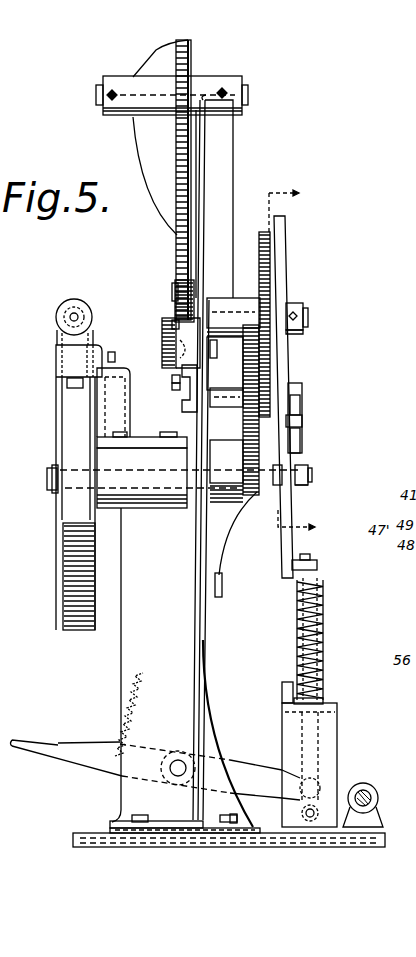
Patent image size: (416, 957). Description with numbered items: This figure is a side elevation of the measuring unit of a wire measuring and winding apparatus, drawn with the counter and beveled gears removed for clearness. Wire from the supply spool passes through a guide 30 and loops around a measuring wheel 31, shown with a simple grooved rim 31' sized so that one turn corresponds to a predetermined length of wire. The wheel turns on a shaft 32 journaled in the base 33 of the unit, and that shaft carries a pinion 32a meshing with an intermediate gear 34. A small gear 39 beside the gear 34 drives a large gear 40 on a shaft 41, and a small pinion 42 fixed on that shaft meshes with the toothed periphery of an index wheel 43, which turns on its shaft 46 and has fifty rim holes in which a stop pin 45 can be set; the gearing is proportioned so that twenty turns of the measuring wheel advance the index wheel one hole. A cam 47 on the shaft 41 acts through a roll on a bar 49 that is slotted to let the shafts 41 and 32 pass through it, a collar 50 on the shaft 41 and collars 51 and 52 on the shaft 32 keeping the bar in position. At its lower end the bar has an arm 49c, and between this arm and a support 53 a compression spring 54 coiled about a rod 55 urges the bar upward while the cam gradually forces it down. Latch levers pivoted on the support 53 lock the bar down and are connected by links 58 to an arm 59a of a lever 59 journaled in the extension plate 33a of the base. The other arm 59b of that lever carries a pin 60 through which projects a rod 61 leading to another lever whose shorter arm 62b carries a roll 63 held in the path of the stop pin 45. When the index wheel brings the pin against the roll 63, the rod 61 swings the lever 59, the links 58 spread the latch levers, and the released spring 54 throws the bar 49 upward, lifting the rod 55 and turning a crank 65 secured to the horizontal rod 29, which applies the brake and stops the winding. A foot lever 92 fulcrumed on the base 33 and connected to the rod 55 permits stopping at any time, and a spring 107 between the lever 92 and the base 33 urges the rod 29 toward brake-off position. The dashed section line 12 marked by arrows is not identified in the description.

The section line 12 is at (303, 361).
The horizontal rod 29 is at (371, 792).
The guide 30 is at (68, 299).
The measuring wheel 31 is at (63, 487).
The grooved rim 31' is at (61, 598).
The shaft 32 is at (47, 478).
The pinion 32a is at (244, 520).
The base 33 is at (197, 653).
The extension plate 33a is at (222, 192).
The intermediate gear 34 is at (243, 418).
The small gear 39 is at (271, 418).
The large gear 40 is at (263, 240).
The shaft 41 is at (308, 318).
The small pinion 42 is at (175, 306).
The index wheel 43 is at (176, 233).
The stop pin 45 is at (172, 290).
The shaft 46 is at (248, 92).
The cam 47 is at (271, 306).
The bar 49 is at (287, 370).
The arm 49c is at (317, 570).
The collar 50 is at (296, 334).
The collar 51 is at (277, 486).
The collar 52 is at (299, 486).
The support 53 is at (337, 728).
The spring 54 is at (324, 649).
The rod 55 is at (318, 703).
The links 58 is at (302, 421).
The lever 59 is at (295, 388).
The arm 59a is at (300, 406).
The arm 59b is at (184, 392).
The pin 60 is at (172, 379).
The rod 61 is at (172, 387).
The shorter arm 62b is at (162, 330).
The roll 63 is at (170, 322).
The crank 65 is at (328, 793).
The foot lever 92 is at (28, 738).
The spring 107 is at (116, 734).